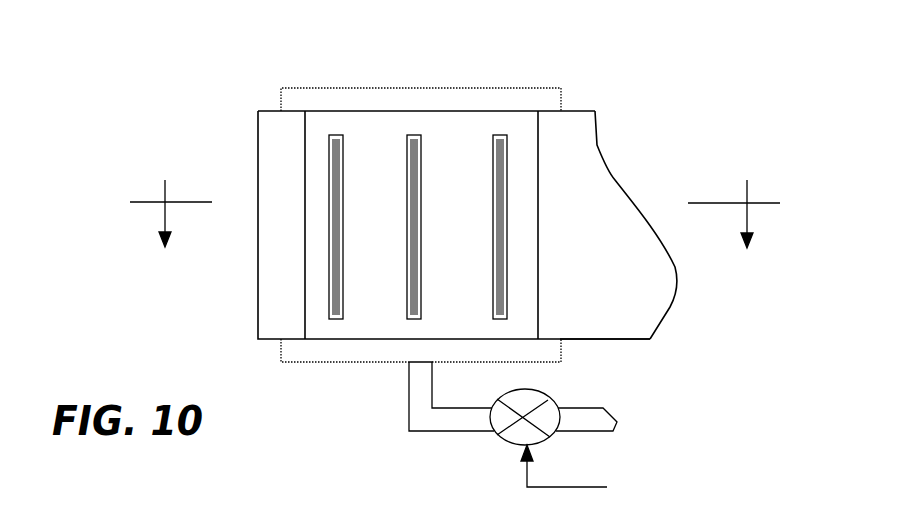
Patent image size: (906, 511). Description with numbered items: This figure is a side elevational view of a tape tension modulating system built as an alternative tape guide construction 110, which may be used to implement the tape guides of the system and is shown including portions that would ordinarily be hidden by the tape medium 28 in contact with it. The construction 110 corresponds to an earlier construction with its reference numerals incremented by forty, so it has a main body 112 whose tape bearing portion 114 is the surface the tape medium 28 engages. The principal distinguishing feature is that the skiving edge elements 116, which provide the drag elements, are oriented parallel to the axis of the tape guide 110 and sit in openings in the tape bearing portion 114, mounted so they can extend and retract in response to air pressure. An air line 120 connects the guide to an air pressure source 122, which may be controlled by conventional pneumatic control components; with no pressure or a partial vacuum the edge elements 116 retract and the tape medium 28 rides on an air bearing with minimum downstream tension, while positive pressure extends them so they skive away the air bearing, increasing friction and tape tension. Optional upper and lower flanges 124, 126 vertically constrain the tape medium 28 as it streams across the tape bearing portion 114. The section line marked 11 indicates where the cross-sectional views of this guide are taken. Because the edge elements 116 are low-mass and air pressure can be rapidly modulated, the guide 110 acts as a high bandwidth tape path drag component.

The tape guide construction 110 is at (188, 112).
The main body 112 is at (538, 152).
The tape bearing portion 114 is at (457, 125).
The skiving edge elements 116 is at (336, 133).
The air line 120 is at (408, 385).
The air pressure source 122 is at (497, 435).
The upper flange 124 is at (309, 88).
The lower flange 126 is at (304, 363).
The tape medium 28 is at (618, 340).
The section line 11- 11 is at (456, 205).